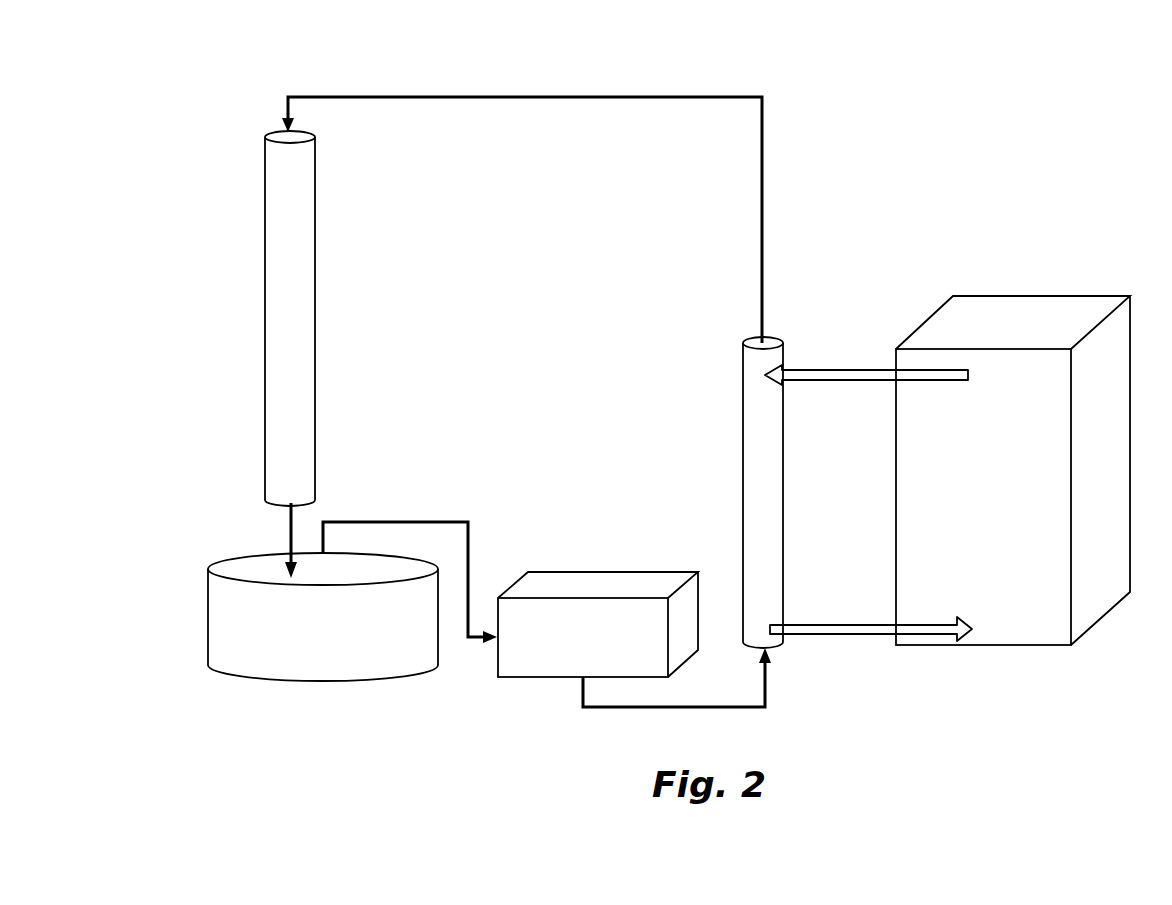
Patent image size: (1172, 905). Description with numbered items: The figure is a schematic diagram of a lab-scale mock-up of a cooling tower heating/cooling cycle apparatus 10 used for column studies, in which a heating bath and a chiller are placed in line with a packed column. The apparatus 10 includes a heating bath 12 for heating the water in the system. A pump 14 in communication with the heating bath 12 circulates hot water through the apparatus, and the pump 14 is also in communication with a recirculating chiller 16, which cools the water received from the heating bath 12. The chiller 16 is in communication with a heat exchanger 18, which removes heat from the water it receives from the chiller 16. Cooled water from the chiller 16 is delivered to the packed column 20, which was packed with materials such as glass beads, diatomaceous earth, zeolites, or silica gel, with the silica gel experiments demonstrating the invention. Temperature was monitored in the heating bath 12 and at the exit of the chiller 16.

The apparatus 10 is at (1020, 72).
The heating bath 12 is at (375, 663).
The pump 14 is at (540, 667).
The recirculating chiller 16 is at (768, 436).
The heat exchanger 18 is at (1118, 427).
The packed column 20 is at (305, 351).